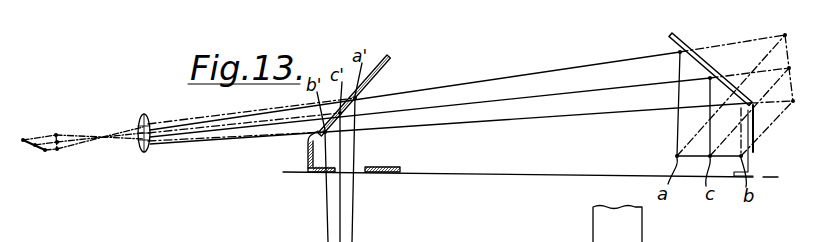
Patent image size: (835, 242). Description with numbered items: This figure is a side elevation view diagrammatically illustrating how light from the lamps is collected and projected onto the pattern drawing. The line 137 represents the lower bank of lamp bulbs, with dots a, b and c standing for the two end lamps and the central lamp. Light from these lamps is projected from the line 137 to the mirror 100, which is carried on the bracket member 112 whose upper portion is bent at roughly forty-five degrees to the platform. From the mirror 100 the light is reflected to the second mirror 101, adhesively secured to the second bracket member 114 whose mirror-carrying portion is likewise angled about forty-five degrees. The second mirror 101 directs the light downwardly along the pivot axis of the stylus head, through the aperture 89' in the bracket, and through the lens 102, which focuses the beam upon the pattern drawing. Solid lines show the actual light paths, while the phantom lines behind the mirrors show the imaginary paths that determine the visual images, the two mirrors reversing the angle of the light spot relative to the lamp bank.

The mirror 100 is at (672, 38).
The second mirror 101 is at (388, 58).
The lens 102 is at (144, 153).
The bracket member 112 is at (686, 42).
The second bracket member 114 is at (306, 147).
The line 137 is at (728, 160).
The aperture 89' is at (385, 158).